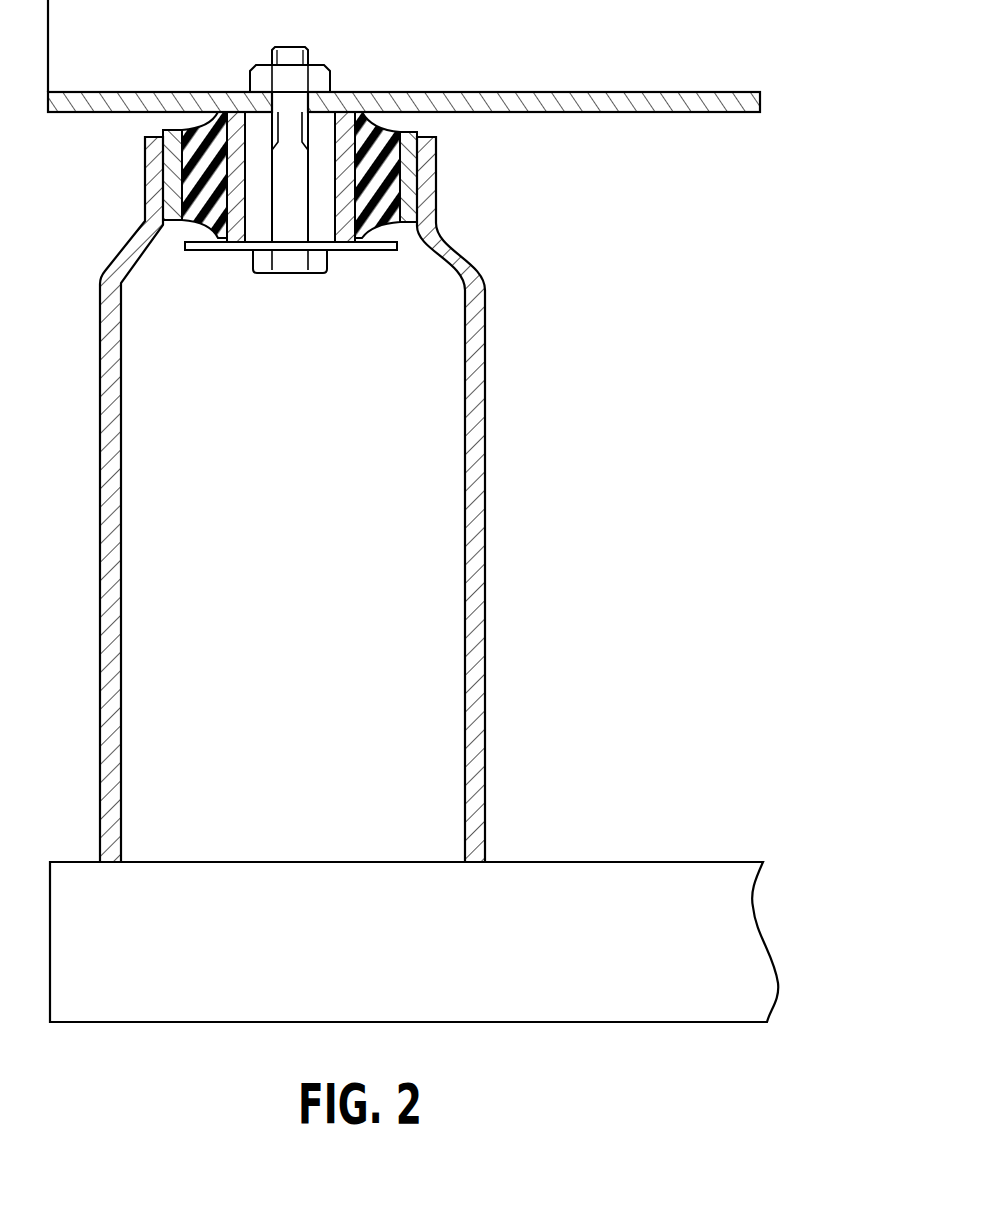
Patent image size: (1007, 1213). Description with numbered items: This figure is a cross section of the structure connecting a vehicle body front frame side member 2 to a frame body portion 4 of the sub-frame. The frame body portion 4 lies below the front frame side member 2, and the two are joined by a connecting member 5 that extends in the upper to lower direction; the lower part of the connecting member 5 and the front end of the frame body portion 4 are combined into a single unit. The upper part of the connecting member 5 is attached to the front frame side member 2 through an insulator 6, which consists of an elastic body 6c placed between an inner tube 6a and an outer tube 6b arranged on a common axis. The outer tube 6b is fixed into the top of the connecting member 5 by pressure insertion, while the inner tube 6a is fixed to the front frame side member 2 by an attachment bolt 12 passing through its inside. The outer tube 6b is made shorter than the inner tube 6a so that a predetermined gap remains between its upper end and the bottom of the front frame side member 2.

The vehicle body front frame side member 2 is at (620, 113).
The frame body portion 4 is at (580, 1007).
The connecting member 5 is at (485, 510).
The insulator 6 is at (287, 223).
The inner tube 6a is at (347, 233).
The outer tube 6b is at (410, 210).
The elastic body 6c is at (387, 157).
The attachment bolt 12 is at (283, 265).